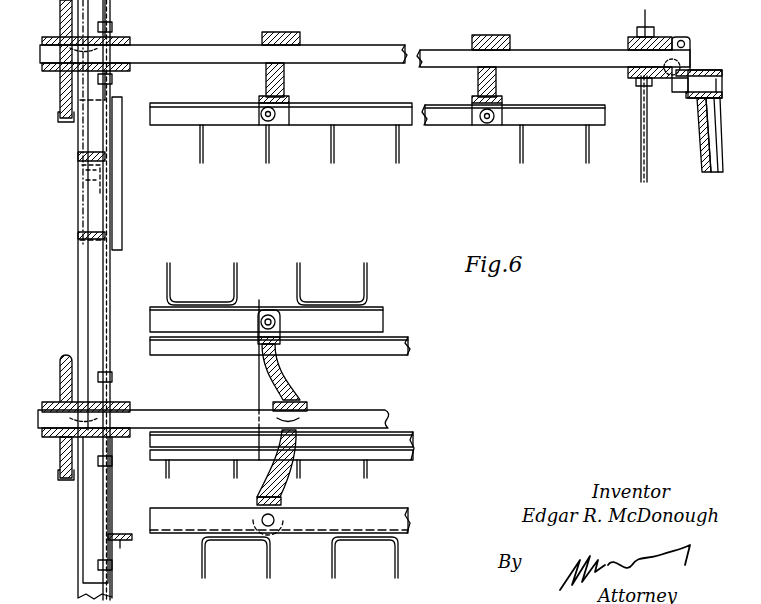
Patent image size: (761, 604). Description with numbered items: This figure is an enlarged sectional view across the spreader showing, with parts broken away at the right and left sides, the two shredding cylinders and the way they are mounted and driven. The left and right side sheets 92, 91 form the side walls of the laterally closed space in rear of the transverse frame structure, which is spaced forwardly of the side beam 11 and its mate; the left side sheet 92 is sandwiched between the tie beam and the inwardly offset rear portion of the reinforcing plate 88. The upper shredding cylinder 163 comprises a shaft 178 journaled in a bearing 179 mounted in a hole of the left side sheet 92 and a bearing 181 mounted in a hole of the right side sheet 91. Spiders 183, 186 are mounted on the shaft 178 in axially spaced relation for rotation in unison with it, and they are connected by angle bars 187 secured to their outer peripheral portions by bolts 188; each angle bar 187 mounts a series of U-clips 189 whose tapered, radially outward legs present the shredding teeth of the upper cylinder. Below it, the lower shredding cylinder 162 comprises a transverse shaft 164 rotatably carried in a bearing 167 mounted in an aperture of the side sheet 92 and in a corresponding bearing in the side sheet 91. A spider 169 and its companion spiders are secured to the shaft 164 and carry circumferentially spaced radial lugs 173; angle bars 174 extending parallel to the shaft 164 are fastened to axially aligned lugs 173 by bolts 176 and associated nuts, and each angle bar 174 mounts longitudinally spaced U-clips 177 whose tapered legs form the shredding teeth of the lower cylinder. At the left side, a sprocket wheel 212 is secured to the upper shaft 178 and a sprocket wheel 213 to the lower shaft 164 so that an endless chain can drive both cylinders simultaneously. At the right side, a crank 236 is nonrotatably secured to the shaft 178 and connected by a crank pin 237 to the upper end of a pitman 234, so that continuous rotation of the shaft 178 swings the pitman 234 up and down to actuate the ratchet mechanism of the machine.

The side beam 11 is at (128, 541).
The reinforcing plate 88 is at (122, 213).
The side sheet 91 is at (647, 155).
The side sheet 92 is at (112, 292).
The lower shredding cylinder 162 is at (383, 305).
The upper shredding cylinder 163 is at (352, 128).
The transverse shaft 164 is at (386, 416).
The bearing 167 is at (128, 406).
The spider 169 is at (258, 393).
The radial lug 173 is at (262, 325).
The angle bar 174 is at (388, 319).
The bolt 176 is at (268, 312).
The U-clip 177 is at (170, 281).
The shaft 178 is at (421, 52).
The bearing 179 is at (128, 40).
The bearing 181 is at (630, 40).
The spider 183 is at (284, 86).
The spider 186 is at (498, 87).
The angle bar 187 is at (428, 130).
The bolt 188 is at (262, 120).
The U-clip 189 is at (330, 160).
The sprocket wheel 212 is at (62, 120).
The sprocket wheel 213 is at (65, 480).
The pitman 234 is at (721, 146).
The crank 236 is at (690, 97).
The crank pin 237 is at (720, 70).